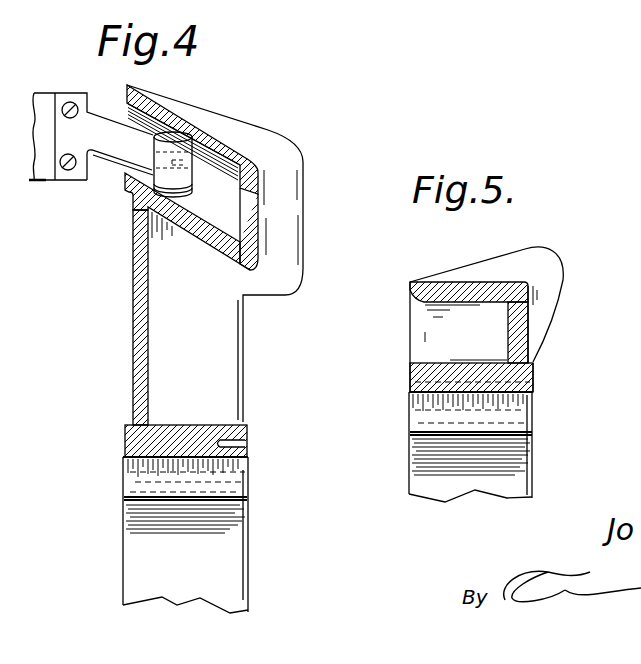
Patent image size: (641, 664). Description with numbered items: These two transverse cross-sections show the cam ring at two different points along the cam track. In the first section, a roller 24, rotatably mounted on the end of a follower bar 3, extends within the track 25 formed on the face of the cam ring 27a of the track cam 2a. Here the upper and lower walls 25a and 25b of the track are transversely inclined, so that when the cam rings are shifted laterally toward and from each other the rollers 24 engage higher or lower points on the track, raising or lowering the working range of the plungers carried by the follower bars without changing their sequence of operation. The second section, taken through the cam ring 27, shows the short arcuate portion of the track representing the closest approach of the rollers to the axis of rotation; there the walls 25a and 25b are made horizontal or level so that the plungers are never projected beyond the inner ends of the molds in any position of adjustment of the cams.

In FIG. 4, the follower bar 3 is at (40, 182).
In FIG. 4, the roller 24 is at (172, 145).
In FIG. 4, the track 25 is at (240, 200).
In FIG. 5, the track 25 is at (434, 325).
In FIG. 4, the upper wall of the track 25a is at (220, 133).
In FIG. 5, the upper wall of the track 25a is at (475, 302).
In FIG. 4, the lower wall of the track 25b is at (203, 222).
In FIG. 5, the lower wall of the track 25b is at (450, 360).
In FIG. 5, the cam ring 27 is at (537, 408).
In FIG. 4, the cam ring 27a is at (218, 376).
In FIG. 4, the track cam 2a is at (232, 538).
In FIG. 5, the track cam 2a is at (535, 463).